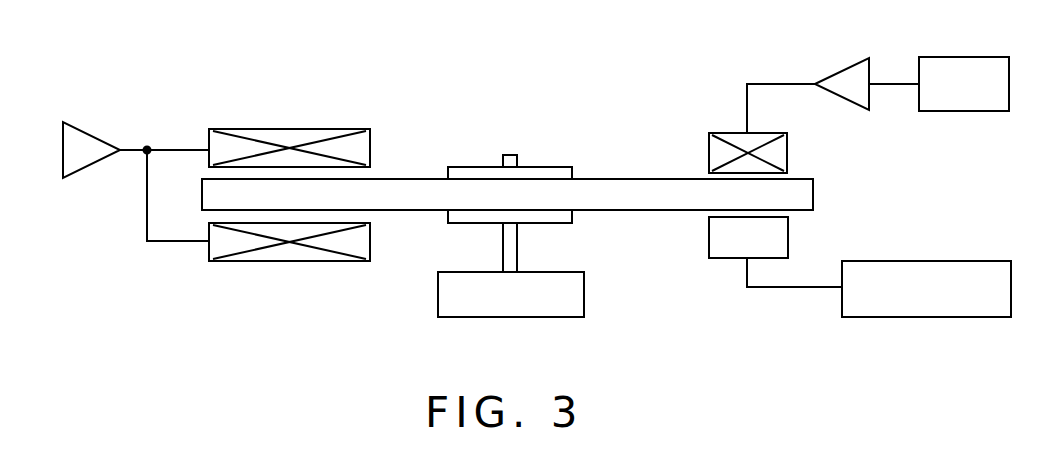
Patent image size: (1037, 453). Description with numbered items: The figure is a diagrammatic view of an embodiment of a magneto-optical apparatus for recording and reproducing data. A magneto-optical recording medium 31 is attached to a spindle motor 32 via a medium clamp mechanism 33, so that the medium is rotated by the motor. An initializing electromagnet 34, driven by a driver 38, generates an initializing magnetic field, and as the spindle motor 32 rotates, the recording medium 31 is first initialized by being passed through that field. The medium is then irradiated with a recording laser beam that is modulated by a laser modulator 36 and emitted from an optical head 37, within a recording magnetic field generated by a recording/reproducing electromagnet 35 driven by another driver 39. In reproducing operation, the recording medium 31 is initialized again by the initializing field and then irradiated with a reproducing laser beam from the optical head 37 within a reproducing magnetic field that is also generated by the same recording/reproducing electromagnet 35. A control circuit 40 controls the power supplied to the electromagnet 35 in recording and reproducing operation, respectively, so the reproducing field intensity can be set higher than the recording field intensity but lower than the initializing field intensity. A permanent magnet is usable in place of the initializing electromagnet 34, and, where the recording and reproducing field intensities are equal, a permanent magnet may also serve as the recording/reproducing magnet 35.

The magneto-optical recording medium 31 is at (815, 193).
The spindle motor 32 is at (517, 318).
The medium clamp mechanism 33 is at (557, 166).
The initializing electromagnet 34 is at (287, 129).
The recording/reproducing electromagnet 35 is at (709, 153).
The laser modulator 36 is at (927, 318).
The optical head 37 is at (709, 238).
The driver 38 is at (89, 134).
The driver 39 is at (850, 63).
The control circuit 40 is at (970, 56).